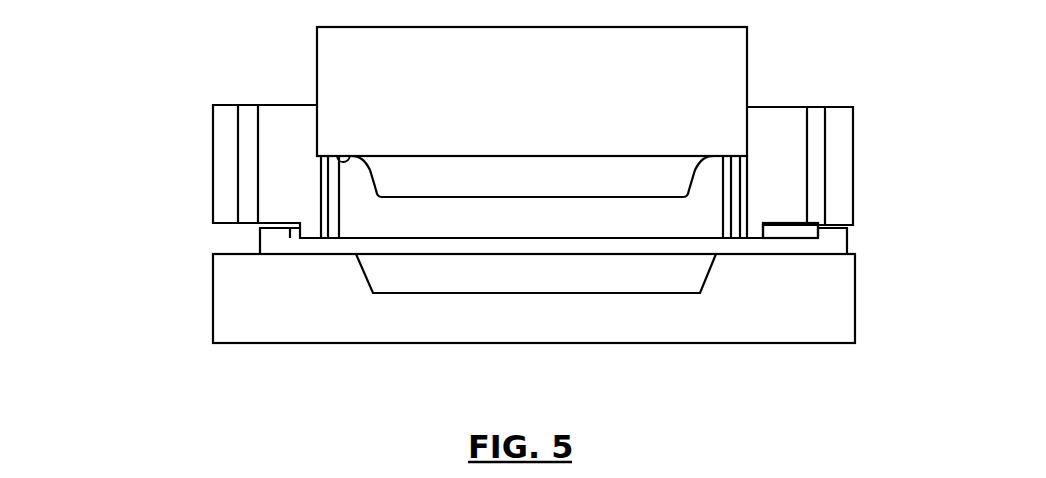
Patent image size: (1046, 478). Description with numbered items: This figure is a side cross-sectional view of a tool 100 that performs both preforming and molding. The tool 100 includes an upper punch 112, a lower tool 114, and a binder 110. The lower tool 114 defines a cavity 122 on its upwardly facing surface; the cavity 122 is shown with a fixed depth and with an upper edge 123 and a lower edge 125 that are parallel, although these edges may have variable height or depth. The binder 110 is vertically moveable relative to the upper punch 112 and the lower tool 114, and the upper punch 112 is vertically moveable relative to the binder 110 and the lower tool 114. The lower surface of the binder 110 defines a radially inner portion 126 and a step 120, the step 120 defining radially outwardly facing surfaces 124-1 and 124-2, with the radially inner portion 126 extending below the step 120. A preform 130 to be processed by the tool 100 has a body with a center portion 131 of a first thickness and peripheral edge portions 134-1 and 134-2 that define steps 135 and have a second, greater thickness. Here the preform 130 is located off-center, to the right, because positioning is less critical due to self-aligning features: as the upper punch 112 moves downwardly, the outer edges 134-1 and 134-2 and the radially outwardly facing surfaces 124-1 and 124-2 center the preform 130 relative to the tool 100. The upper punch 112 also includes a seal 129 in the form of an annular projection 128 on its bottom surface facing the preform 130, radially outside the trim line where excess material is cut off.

The tool 100 is at (120, 56).
The binder 110 is at (212, 120).
The upper punch 112 is at (316, 60).
The lower tool 114 is at (213, 289).
The step 120 is at (285, 224).
The cavity 122 is at (474, 294).
The upper edge 123 is at (812, 258).
The radially outwardly facing surface 124-1 is at (266, 223).
The radially outwardly facing surface 124-2 is at (763, 229).
The lower edge 125 is at (575, 294).
The radially inner portion 126 is at (312, 238).
The annular projection 128 is at (345, 157).
The seal 129 is at (336, 149).
The preform 130 is at (545, 245).
The center portion 131 is at (472, 245).
The peripheral edge portion 134-1 is at (268, 237).
The peripheral edge portion 134-2 is at (828, 234).
The step 135 is at (280, 229).